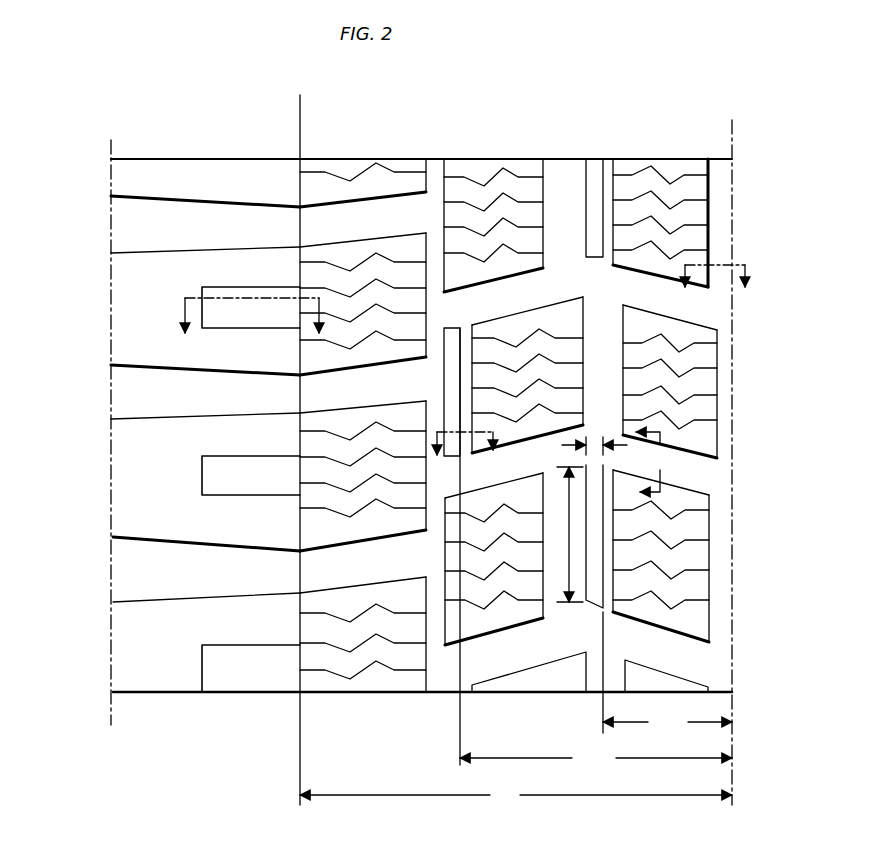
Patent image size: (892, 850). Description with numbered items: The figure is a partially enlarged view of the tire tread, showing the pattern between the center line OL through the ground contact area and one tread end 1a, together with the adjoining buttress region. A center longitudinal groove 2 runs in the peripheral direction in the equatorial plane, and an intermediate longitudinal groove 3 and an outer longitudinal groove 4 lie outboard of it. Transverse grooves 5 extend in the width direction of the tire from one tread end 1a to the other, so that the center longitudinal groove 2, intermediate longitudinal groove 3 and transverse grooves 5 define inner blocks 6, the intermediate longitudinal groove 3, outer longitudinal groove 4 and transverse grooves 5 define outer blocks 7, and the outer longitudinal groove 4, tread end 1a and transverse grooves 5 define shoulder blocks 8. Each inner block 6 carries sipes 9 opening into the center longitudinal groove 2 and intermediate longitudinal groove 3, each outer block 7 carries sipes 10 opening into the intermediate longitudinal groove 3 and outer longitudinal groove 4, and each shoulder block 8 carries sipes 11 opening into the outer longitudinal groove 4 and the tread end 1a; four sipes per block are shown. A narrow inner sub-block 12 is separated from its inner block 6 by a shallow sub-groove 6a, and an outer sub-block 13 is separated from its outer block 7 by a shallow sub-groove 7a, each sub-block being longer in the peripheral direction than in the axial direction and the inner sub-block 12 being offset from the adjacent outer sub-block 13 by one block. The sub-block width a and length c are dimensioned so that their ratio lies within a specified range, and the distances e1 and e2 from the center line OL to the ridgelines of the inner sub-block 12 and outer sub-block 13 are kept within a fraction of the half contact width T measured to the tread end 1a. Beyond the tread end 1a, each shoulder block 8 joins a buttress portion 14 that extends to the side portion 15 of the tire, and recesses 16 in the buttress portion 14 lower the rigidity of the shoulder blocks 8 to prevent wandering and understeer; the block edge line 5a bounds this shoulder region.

The straight line HL is at (111, 140).
The center line OL is at (732, 142).
The tread end 1a is at (300, 123).
The center longitudinal groove 2 is at (717, 172).
The intermediate longitudinal groove 3 is at (556, 180).
The outer longitudinal groove 4 is at (436, 170).
The transverse groove 5 is at (718, 487).
The block edge line 5a is at (135, 588).
The inner block 6 is at (660, 199).
The sub-groove 6a is at (605, 258).
The outer block 7 is at (493, 201).
The sub-groove 7a is at (475, 455).
The shoulder block 8 is at (348, 253).
The sipe 9 is at (631, 172).
The sipe 10 is at (462, 178).
The sipe 11 is at (410, 680).
The inner sub-block 12 is at (591, 608).
The outer sub-block 13 is at (452, 335).
The buttress portion 14 is at (127, 288).
The side portion 15 is at (100, 175).
The recess 16 is at (222, 470).
The width a is at (594, 436).
The length c is at (514, 556).
The distance e1 is at (667, 672).
The distance e2 is at (596, 759).
The half width T is at (516, 796).